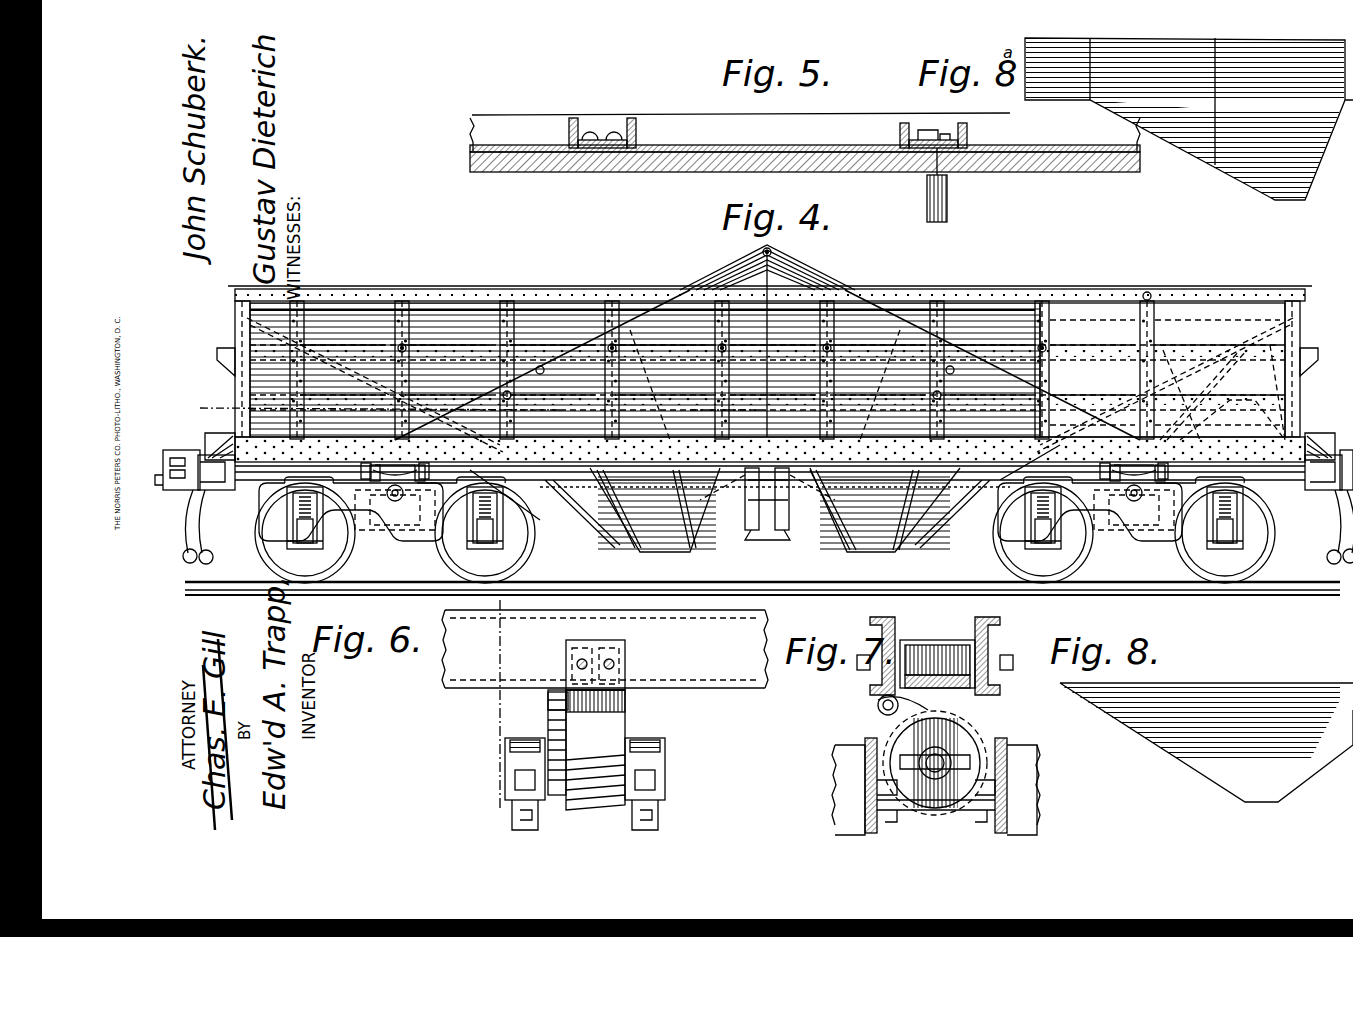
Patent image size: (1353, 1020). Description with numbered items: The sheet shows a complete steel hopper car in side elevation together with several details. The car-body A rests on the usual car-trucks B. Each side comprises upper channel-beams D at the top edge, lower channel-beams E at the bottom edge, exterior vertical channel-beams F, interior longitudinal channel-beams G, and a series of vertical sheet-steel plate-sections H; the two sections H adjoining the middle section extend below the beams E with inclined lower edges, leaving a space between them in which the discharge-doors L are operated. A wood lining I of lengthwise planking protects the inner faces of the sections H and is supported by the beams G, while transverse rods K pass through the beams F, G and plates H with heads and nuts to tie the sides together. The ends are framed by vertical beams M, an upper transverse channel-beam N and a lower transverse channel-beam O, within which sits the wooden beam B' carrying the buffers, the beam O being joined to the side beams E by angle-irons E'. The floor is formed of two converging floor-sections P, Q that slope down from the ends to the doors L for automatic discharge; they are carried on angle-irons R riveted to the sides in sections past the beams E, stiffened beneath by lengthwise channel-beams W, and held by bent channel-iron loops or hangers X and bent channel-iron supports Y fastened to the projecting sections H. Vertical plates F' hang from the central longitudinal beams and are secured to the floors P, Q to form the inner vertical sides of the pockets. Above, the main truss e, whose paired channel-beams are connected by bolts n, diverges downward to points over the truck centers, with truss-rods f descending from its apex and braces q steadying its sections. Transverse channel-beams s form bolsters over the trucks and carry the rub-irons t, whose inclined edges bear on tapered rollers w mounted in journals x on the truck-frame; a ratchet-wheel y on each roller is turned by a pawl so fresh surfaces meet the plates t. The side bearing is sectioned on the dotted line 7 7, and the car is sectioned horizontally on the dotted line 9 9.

In FIG. 4, the car-body A is at (770, 373).
In FIG. 4, the car-trucks B is at (765, 523).
In FIG. 4, the wooden beam B' is at (754, 495).
In FIG. 4, the upper channel-beams D is at (450, 305).
In FIG. 4, the lower channel-beams E is at (1232, 421).
In FIG. 5, the lower channel-beams E is at (805, 132).
In FIG. 4, the angle-irons E' is at (767, 517).
In FIG. 4, the exterior vertical channel-beams F is at (715, 350).
In FIG. 4, the vertical plates F' is at (790, 322).
In FIG. 5, the vertical plates F' is at (768, 113).
In FIG. 8, the vertical plates F' is at (1206, 742).
In FIG. 4, the interior longitudinal channel-beams G is at (1090, 350).
In FIG. 4, the vertical metal plate-sections H is at (355, 308).
In FIG. 5, the vertical metal plate-sections H is at (760, 146).
In FIG. 8A, the vertical metal plate-sections H is at (1189, 119).
In FIG. 5, the wood lining I is at (990, 172).
In FIG. 4, the transverse rods K is at (500, 350).
In FIG. 5, the transverse rods K is at (927, 198).
In FIG. 4, the discharge-doors L is at (690, 540).
In FIG. 4, the vertical beams M is at (235, 325).
In FIG. 4, the transverse channel-beam N is at (240, 290).
In FIG. 4, the transverse channel-beam O is at (225, 433).
In FIG. 4, the floor-section P is at (646, 510).
In FIG. 4, the floor-section Q is at (885, 510).
In FIG. 4, the angle-irons R is at (300, 335).
In FIG. 4, the channel-beams W is at (320, 355).
In FIG. 4, the bent channel-iron loops or hangers X is at (552, 505).
In FIG. 4, the bent channel-iron supports Y is at (1262, 356).
In FIG. 4, the truss e is at (800, 257).
In FIG. 4, the truss-rods f is at (775, 280).
In FIG. 4, the bolts n is at (752, 373).
In FIG. 4, the braces q is at (662, 398).
In FIG. 4, the transverse channel-beams s is at (370, 472).
In FIG. 7, the transverse channel-beams s is at (895, 630).
In FIG. 6, the rub-irons t is at (625, 702).
In FIG. 7, the rub-irons t is at (980, 698).
In FIG. 6, the tapered roller w is at (595, 750).
In FIG. 6, the journals x is at (505, 755).
In FIG. 7, the journals x is at (936, 786).
In FIG. 6, the ratchet-wheel y is at (548, 722).
In FIG. 7, the ratchet-wheel y is at (970, 740).
In FIG. 6, the section line 7 7 is at (501, 705).
In FIG. 4, the section line 9 9 is at (471, 408).